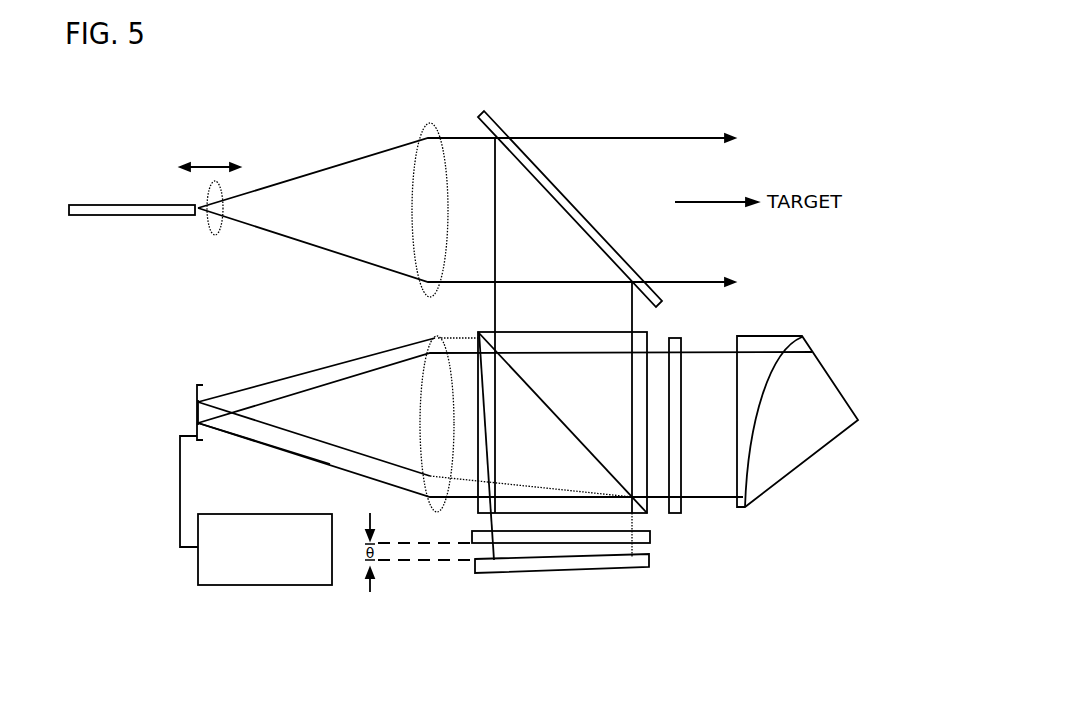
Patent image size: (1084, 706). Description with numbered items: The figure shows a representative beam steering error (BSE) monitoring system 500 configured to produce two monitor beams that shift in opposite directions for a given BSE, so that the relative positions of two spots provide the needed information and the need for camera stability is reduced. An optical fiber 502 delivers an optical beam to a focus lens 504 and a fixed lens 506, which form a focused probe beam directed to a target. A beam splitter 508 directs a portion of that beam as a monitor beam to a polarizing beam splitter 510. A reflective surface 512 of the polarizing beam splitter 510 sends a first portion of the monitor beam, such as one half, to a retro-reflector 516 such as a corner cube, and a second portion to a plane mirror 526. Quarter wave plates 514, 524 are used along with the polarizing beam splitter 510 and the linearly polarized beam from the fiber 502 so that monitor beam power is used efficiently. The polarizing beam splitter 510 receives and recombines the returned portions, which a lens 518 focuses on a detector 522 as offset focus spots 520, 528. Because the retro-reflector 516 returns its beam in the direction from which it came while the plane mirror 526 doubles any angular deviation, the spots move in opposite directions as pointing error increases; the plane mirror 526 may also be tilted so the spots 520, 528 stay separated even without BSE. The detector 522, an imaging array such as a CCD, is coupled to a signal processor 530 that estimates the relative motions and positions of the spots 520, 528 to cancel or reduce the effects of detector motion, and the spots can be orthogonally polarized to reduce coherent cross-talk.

The BSE monitoring system 500 is at (710, 53).
The optical fiber 502 is at (83, 203).
The focus lens 504 is at (207, 223).
The fixed lens 506 is at (430, 123).
The beam splitter 508 is at (503, 123).
The polarizing beam splitter 510 is at (475, 507).
The reflective surface 512 is at (543, 400).
The quarter wave plate 514 is at (675, 337).
The retro-reflector 516 is at (797, 472).
The lens 518 is at (415, 373).
The focus spot 520 is at (202, 398).
The detector 522 is at (195, 410).
The quarter wave plate 524 is at (652, 534).
The plane mirror 526 is at (627, 568).
The focus spot 528 is at (200, 427).
The signal processor 530 is at (198, 575).